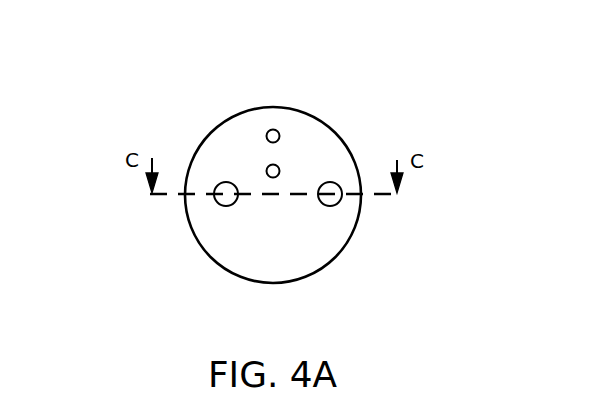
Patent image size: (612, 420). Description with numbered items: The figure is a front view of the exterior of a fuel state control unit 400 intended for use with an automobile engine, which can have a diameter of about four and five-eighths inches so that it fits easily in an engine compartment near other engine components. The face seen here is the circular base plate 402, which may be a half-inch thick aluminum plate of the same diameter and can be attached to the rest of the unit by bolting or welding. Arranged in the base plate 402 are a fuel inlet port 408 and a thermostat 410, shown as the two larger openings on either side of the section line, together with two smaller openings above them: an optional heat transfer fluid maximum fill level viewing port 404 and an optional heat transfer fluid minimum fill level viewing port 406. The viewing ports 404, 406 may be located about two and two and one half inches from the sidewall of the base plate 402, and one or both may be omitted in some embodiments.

The fuel state control unit 400 is at (148, 93).
The base plate 402 is at (343, 161).
The maximum fill level viewing port 404 is at (268, 131).
The minimum fill level viewing port 406 is at (278, 165).
The fuel inlet port 408 is at (332, 206).
The thermostat 410 is at (221, 205).